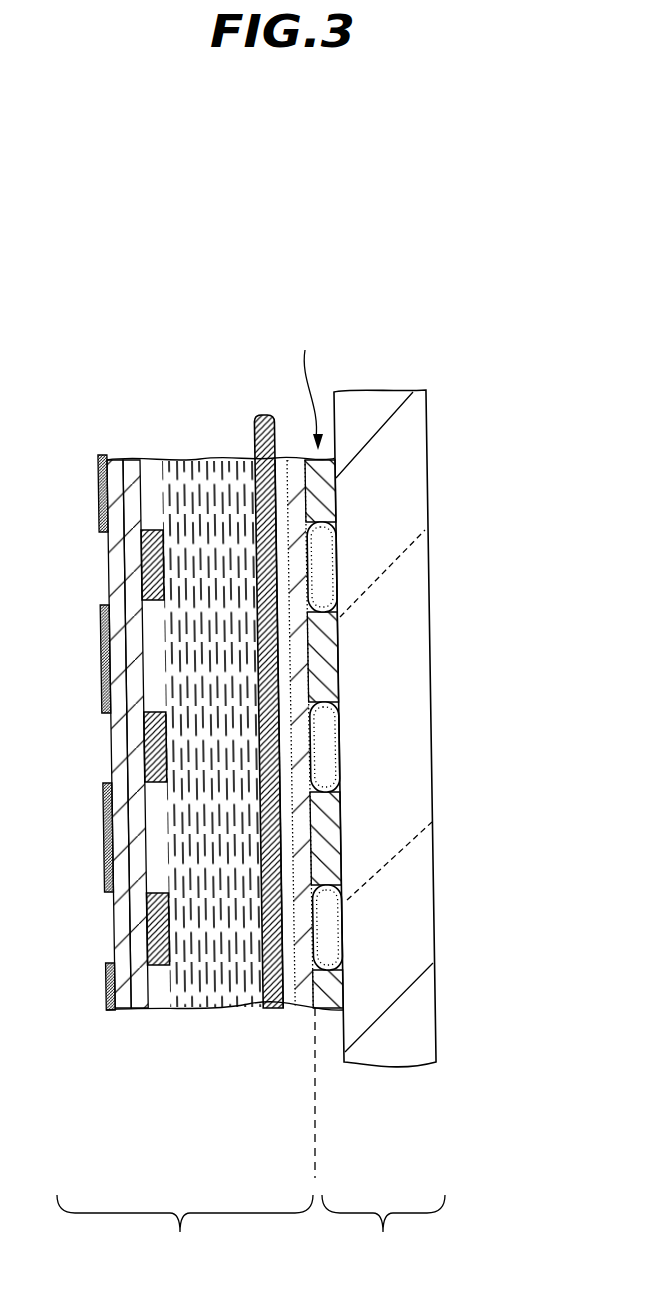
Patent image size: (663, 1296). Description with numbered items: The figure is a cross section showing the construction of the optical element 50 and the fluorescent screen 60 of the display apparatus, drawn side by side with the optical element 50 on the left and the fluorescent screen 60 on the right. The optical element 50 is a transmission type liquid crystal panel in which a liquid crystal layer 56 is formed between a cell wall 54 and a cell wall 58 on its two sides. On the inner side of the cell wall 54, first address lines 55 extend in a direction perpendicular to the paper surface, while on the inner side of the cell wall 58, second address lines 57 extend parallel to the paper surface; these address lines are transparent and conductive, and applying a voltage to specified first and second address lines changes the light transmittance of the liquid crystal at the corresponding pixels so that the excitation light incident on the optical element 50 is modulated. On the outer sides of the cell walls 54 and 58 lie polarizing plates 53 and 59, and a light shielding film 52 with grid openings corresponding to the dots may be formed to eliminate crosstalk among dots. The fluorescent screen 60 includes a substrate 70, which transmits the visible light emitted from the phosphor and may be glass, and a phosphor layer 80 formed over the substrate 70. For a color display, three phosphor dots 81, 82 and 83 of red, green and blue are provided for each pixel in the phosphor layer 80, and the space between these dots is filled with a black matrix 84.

The optical element 50 is at (185, 1234).
The light shielding film 52 is at (108, 1012).
The polarizing plate 53 is at (122, 1012).
The cell wall 54 is at (141, 1010).
The first address lines 55 is at (149, 530).
The liquid crystal layer 56 is at (222, 1009).
The second address lines 57 is at (262, 414).
The cell wall 58 is at (283, 1012).
The polarizing plate 59 is at (302, 1008).
The fluorescent screen 60 is at (383, 1234).
The substrate 70 is at (382, 408).
The phosphor layer 80 is at (309, 382).
The phosphor dot 81 is at (336, 541).
The phosphor dot 82 is at (352, 762).
The phosphor dot 83 is at (337, 900).
The black matrix 84 is at (337, 982).